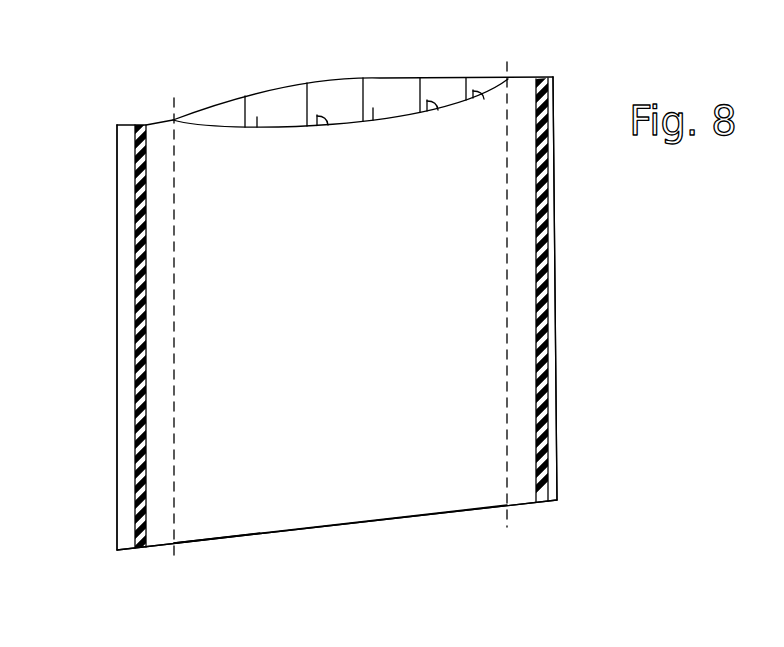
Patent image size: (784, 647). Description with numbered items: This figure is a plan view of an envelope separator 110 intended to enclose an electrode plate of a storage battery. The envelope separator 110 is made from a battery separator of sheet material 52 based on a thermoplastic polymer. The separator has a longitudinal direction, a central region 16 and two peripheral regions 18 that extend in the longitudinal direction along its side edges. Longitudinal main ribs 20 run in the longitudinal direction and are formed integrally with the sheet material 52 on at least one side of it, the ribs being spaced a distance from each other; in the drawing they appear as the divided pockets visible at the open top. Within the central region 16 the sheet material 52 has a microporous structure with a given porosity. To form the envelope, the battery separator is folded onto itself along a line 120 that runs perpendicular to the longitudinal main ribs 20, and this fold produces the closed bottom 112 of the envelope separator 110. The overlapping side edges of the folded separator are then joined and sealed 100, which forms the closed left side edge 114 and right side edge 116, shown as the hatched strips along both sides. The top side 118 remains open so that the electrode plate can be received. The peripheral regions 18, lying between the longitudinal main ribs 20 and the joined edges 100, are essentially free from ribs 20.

The joined and sealed edges 100 is at (142, 126).
The envelope separator 110 is at (622, 262).
The closed bottom 112 is at (375, 522).
The left side edge 114 is at (117, 332).
The right side edge 116 is at (553, 313).
The open top side 118 is at (478, 80).
The fold line 120 is at (220, 542).
The central region 16 is at (496, 512).
The peripheral regions 18 is at (117, 552).
The longitudinal main ribs 20 is at (360, 86).
The sheet material 52 is at (283, 420).